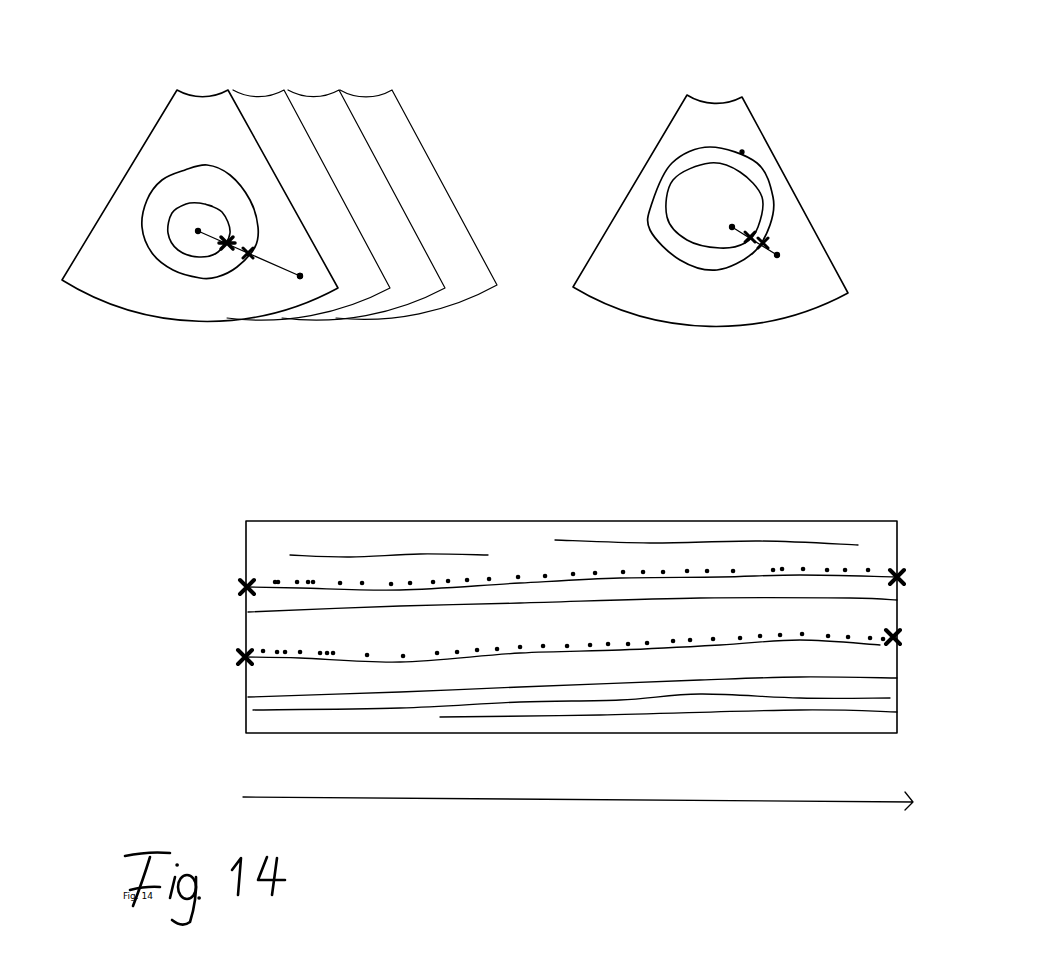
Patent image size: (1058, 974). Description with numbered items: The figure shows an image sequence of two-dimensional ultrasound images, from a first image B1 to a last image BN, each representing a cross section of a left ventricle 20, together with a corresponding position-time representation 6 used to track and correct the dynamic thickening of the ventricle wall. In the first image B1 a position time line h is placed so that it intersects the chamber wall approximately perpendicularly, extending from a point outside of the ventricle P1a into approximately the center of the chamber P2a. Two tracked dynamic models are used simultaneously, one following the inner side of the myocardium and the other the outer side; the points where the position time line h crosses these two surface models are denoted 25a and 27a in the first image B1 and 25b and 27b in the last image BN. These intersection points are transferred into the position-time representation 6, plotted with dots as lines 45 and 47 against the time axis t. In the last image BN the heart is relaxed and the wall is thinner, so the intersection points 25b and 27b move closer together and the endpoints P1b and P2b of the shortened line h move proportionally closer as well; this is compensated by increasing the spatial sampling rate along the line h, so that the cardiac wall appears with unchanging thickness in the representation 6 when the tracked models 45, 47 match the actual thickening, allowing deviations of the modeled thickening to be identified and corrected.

The first image B1 is at (158, 117).
The last image BN is at (660, 130).
The left ventricle 20 is at (141, 194).
The point approximately at the center of the chamber P2a is at (198, 233).
The point outside of the ventricle P1a is at (307, 293).
The position time line h is at (207, 245).
The point of intersection with the endocardium model in the first image 25a is at (225, 250).
The point of intersection with the epicardium model in the first image 27a is at (247, 287).
The inner endpoint of the position time line in the last image P2b is at (732, 227).
The outer endpoint of the position time line in the last image P1b is at (780, 253).
The point of intersection with the endocardium model in the last image 25b is at (748, 245).
The point of intersection with the epicardium model in the last image 27b is at (762, 252).
The position-time representation 6 is at (533, 521).
The line of intersection points of the first tracked model 45 is at (247, 587).
The line of intersection points of the second tracked model 47 is at (245, 657).
The time axis t is at (586, 824).